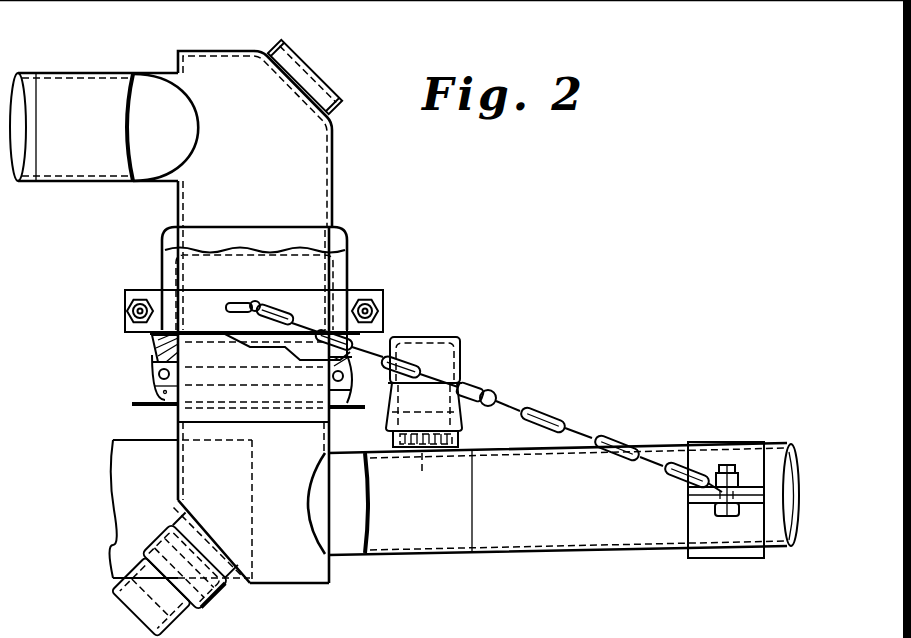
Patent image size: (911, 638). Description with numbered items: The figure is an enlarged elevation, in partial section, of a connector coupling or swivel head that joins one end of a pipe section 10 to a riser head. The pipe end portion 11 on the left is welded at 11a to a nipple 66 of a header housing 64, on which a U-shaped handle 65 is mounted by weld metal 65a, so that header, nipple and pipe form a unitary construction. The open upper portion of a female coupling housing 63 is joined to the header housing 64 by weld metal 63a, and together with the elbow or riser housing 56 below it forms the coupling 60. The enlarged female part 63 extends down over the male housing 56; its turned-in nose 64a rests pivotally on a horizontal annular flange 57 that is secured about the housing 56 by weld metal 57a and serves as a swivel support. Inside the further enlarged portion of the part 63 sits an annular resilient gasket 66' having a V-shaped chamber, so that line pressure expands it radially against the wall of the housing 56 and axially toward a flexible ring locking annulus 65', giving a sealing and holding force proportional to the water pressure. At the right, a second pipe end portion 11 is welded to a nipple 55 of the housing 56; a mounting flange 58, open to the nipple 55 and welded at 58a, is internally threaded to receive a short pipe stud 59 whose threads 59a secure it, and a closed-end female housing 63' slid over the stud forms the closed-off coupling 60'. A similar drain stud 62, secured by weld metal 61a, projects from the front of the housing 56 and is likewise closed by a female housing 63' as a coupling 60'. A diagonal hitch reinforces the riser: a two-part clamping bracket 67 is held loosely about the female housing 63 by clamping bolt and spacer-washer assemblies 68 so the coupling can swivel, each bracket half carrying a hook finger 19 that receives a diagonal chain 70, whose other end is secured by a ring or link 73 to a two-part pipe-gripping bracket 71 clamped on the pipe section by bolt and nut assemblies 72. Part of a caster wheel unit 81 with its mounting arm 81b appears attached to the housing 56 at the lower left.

The pipe section 10 is at (22, 74).
The pipe end portion 11 is at (22, 182).
The weld 11a is at (37, 133).
The nipple 66 is at (146, 103).
The header housing 64 is at (333, 180).
The handle 65 is at (323, 77).
The weld metal 65a is at (240, 48).
The weld metal 63a is at (175, 222).
The coupling 60 is at (231, 315).
The female coupling housing 63 is at (288, 280).
The clamping bracket 67 is at (306, 294).
The clamping bolt and spacer-washer assemblies 68 is at (126, 300).
The hook finger 19 is at (225, 308).
The elbow or riser housing 56 is at (355, 283).
The resilient gasket 66' is at (132, 349).
The locking annulus 65' is at (137, 377).
The turned-in nose 64a is at (157, 396).
The annular flange 57 is at (140, 404).
The weld metal 57a is at (330, 414).
The female coupling housing 63' is at (265, 500).
The coupling 60' is at (331, 482).
The pipe stud section 59 is at (391, 434).
The threads 59a is at (419, 476).
The mounting flange 58 is at (461, 438).
The weld 58a is at (466, 443).
The diagonal chain 70 is at (550, 411).
The ring or link 73 is at (710, 473).
The bolt and nut assemblies 72 is at (733, 470).
The pipe section-gripping bracket 71 is at (750, 560).
The nipple 55 is at (443, 557).
The caster wheel unit 81 is at (112, 475).
The mounting arm 81b is at (112, 517).
The pipe stud section 62 is at (185, 527).
The weld metal 61a is at (226, 578).